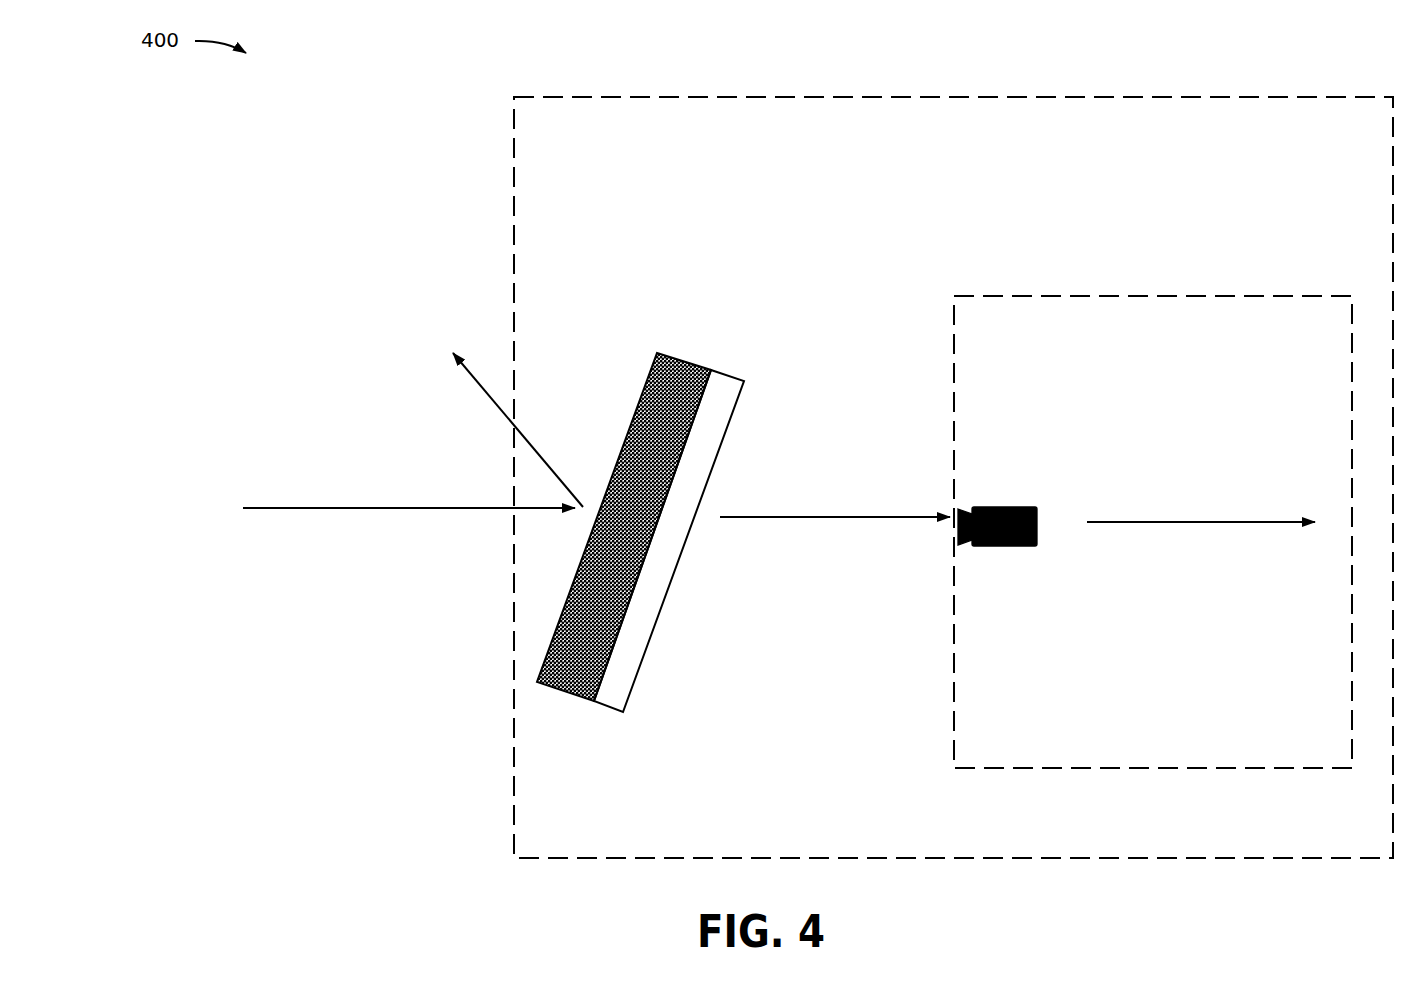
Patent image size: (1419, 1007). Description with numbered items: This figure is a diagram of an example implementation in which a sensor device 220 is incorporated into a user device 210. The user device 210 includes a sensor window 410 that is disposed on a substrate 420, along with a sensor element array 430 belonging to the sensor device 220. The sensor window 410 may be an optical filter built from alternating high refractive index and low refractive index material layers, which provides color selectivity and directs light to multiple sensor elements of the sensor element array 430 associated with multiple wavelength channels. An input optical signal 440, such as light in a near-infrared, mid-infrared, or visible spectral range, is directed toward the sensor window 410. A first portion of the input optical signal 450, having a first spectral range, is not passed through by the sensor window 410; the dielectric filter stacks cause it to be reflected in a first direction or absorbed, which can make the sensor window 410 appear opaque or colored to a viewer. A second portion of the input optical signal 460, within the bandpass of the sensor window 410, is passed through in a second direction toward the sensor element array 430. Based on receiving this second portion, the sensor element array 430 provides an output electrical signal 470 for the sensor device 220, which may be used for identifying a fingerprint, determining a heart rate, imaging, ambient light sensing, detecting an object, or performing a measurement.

The user device 210 is at (953, 456).
The sensor device 220 is at (1153, 510).
The sensor window 410 is at (682, 361).
The substrate 420 is at (739, 382).
The sensor element array 430 is at (1000, 507).
The input optical signal 440 is at (409, 478).
The first portion of the input optical signal 450 is at (423, 382).
The second portion of the input optical signal 460 is at (835, 455).
The output electrical signal 470 is at (1201, 476).